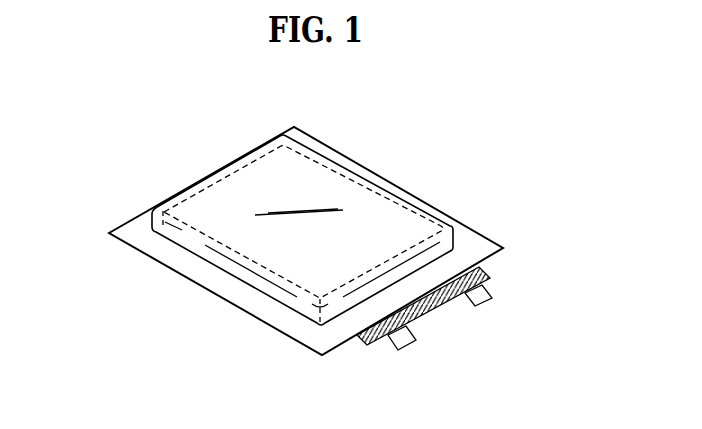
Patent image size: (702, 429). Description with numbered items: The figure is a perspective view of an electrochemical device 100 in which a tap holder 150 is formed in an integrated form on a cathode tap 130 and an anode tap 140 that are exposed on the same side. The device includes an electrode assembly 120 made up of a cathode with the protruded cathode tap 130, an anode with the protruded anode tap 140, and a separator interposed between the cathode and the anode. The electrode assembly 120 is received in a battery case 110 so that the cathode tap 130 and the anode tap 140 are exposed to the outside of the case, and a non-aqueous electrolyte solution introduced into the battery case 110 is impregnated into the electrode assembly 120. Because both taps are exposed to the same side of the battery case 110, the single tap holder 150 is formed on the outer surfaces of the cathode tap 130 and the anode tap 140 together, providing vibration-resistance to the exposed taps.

The electrochemical device 100 is at (410, 137).
The battery case 110 is at (469, 239).
The electrode assembly 120 is at (400, 218).
The cathode tap 130 is at (485, 303).
The anode tap 140 is at (411, 345).
The tap holder 150 is at (487, 275).